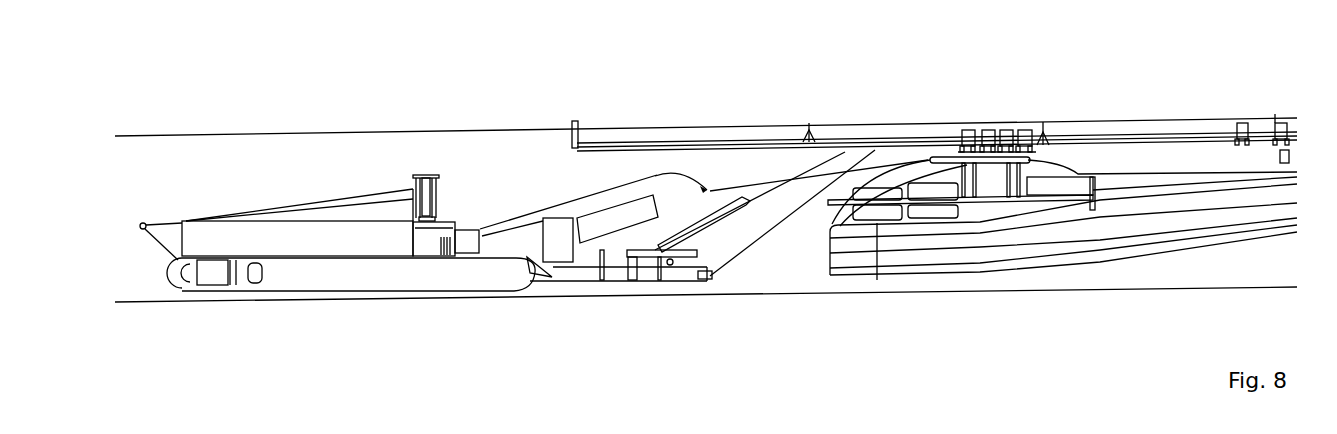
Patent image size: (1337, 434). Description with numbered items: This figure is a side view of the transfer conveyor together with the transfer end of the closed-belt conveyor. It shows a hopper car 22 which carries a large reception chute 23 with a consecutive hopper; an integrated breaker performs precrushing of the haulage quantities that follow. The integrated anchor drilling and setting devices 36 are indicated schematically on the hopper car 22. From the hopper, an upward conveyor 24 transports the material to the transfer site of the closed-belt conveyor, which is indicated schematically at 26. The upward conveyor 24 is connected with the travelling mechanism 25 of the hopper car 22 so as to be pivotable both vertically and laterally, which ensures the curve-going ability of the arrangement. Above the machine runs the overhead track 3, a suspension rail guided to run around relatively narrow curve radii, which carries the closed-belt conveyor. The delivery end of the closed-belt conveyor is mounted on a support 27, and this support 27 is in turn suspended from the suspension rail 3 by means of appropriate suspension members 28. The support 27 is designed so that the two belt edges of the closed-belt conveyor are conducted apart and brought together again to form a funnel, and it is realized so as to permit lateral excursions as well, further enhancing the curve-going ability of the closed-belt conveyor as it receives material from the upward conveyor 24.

The overhead track 3 is at (613, 144).
The hopper car 22 is at (296, 178).
The reception chute 23 is at (167, 237).
The upward conveyor 24 is at (747, 225).
The travelling mechanism 25 is at (382, 288).
The transfer site of the closed-belt conveyor 26 is at (996, 107).
The support 27 is at (1110, 187).
The suspension members 28 is at (984, 130).
The anchor drilling and setting devices 36 is at (424, 185).